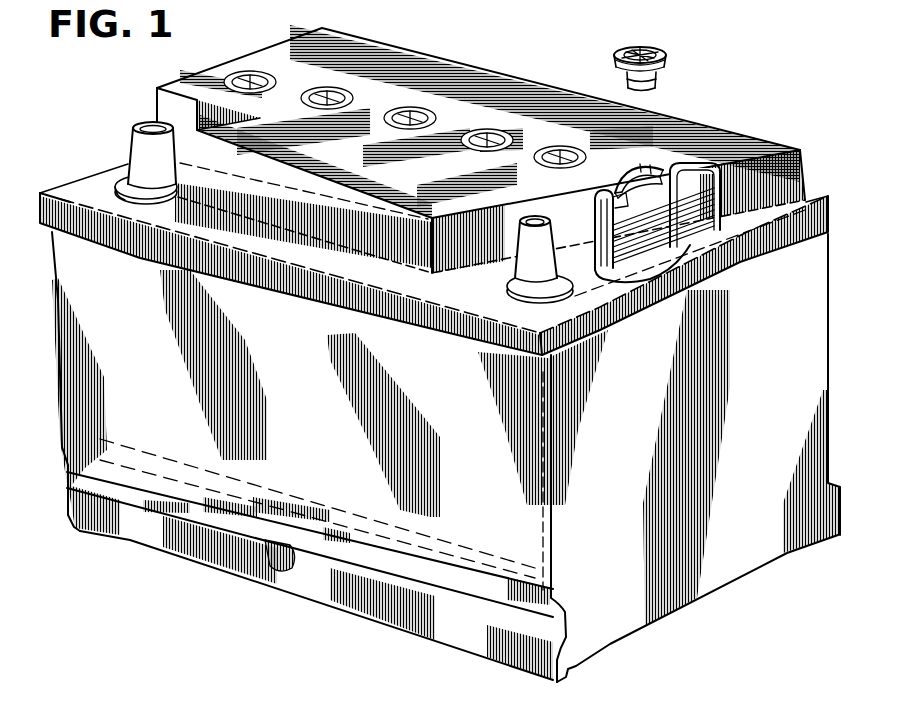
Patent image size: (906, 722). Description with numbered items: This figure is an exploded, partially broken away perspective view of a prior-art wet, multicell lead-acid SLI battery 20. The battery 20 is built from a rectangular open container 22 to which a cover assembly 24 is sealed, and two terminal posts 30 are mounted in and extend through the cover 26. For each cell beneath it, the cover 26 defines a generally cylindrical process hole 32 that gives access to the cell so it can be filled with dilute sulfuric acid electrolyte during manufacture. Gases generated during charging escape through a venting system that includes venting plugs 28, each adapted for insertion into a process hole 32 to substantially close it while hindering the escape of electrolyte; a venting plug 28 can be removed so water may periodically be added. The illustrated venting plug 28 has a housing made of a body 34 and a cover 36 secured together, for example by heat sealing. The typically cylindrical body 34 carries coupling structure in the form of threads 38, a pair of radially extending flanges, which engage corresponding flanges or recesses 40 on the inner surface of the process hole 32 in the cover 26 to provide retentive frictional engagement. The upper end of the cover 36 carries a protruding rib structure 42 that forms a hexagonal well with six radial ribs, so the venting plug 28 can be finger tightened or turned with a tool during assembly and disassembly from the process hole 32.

The battery 20 is at (103, 611).
The container 22 is at (600, 525).
The cover assembly 24 is at (700, 103).
The cover 26 is at (370, 187).
The venting plug 28 is at (676, 52).
The terminal post 30 is at (135, 122).
The process hole 32 is at (590, 188).
The body 34 is at (657, 82).
The cover 36 is at (620, 46).
The threads 38 is at (614, 80).
The flanges or recesses 40 is at (692, 250).
The protruding rib structure 42 is at (634, 47).